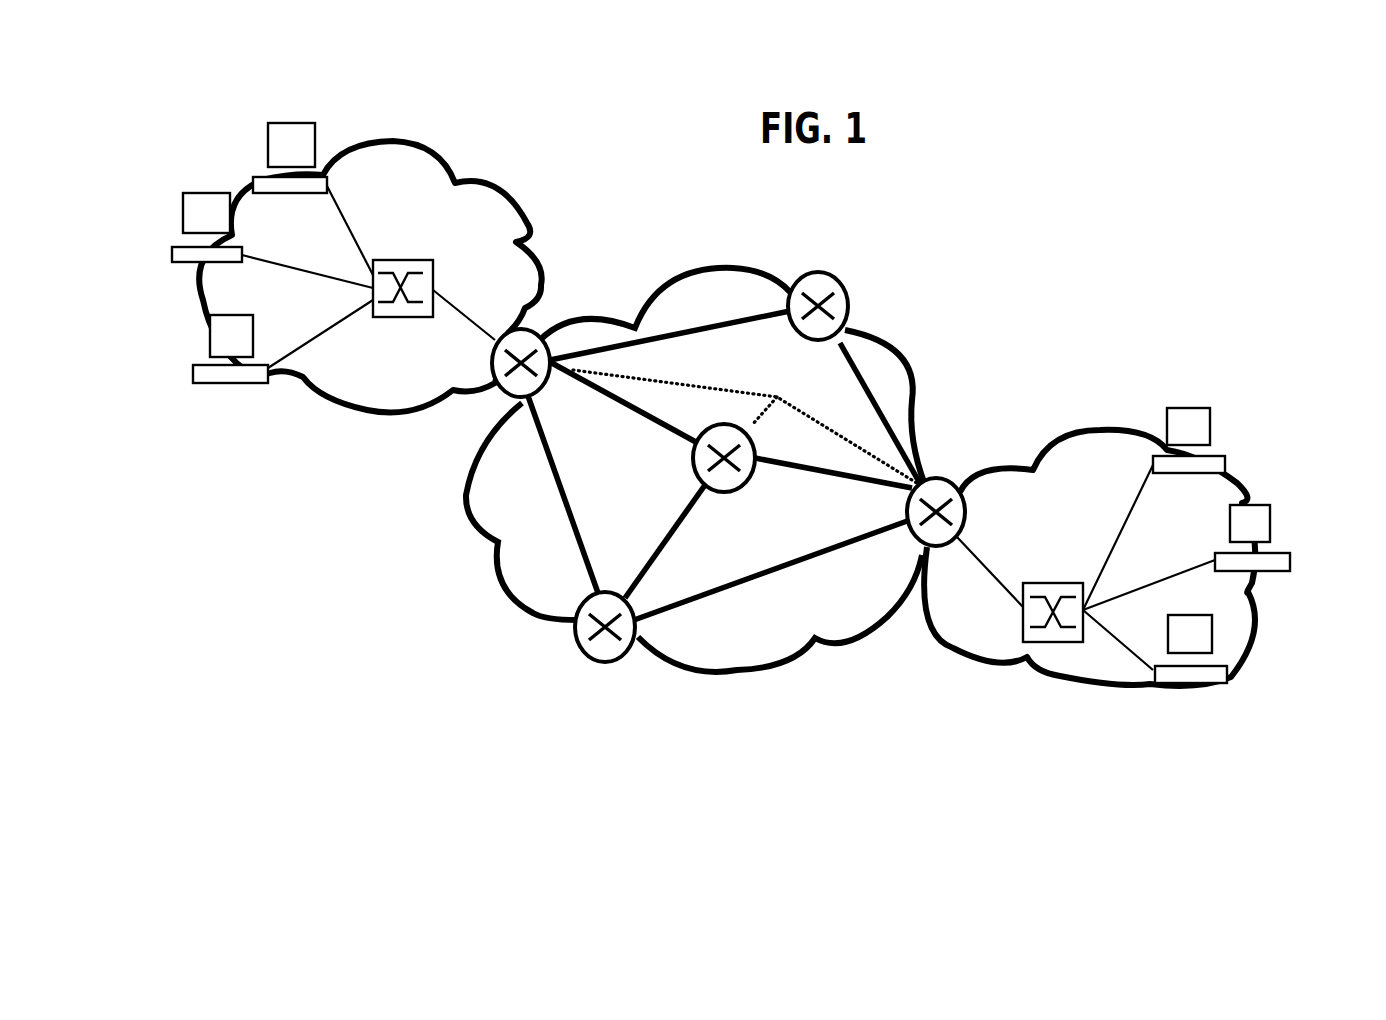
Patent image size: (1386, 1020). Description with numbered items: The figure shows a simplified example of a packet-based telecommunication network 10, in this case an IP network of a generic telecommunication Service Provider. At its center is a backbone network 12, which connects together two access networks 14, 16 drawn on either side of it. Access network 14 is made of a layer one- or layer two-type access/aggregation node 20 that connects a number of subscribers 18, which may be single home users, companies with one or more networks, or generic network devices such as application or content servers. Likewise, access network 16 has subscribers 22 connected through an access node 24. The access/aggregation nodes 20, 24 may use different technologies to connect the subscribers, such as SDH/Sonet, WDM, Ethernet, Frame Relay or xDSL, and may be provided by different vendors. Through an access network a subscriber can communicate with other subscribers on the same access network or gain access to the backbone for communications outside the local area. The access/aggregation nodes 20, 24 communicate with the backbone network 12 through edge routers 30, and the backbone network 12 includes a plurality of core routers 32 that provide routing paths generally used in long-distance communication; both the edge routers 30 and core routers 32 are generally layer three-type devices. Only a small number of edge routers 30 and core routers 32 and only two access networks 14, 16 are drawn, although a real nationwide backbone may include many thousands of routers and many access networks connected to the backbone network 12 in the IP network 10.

The packet-based telecommunication network 10 is at (905, 258).
The backbone network 12 is at (683, 276).
The access network 14 is at (1246, 609).
The access network 16 is at (460, 183).
The subscribers 18 is at (1189, 413).
The access/aggregation node 20 is at (1033, 642).
The subscribers 22 is at (287, 128).
The access node 24 is at (400, 267).
The edge routers 30 is at (538, 340).
The core routers 32 is at (822, 327).